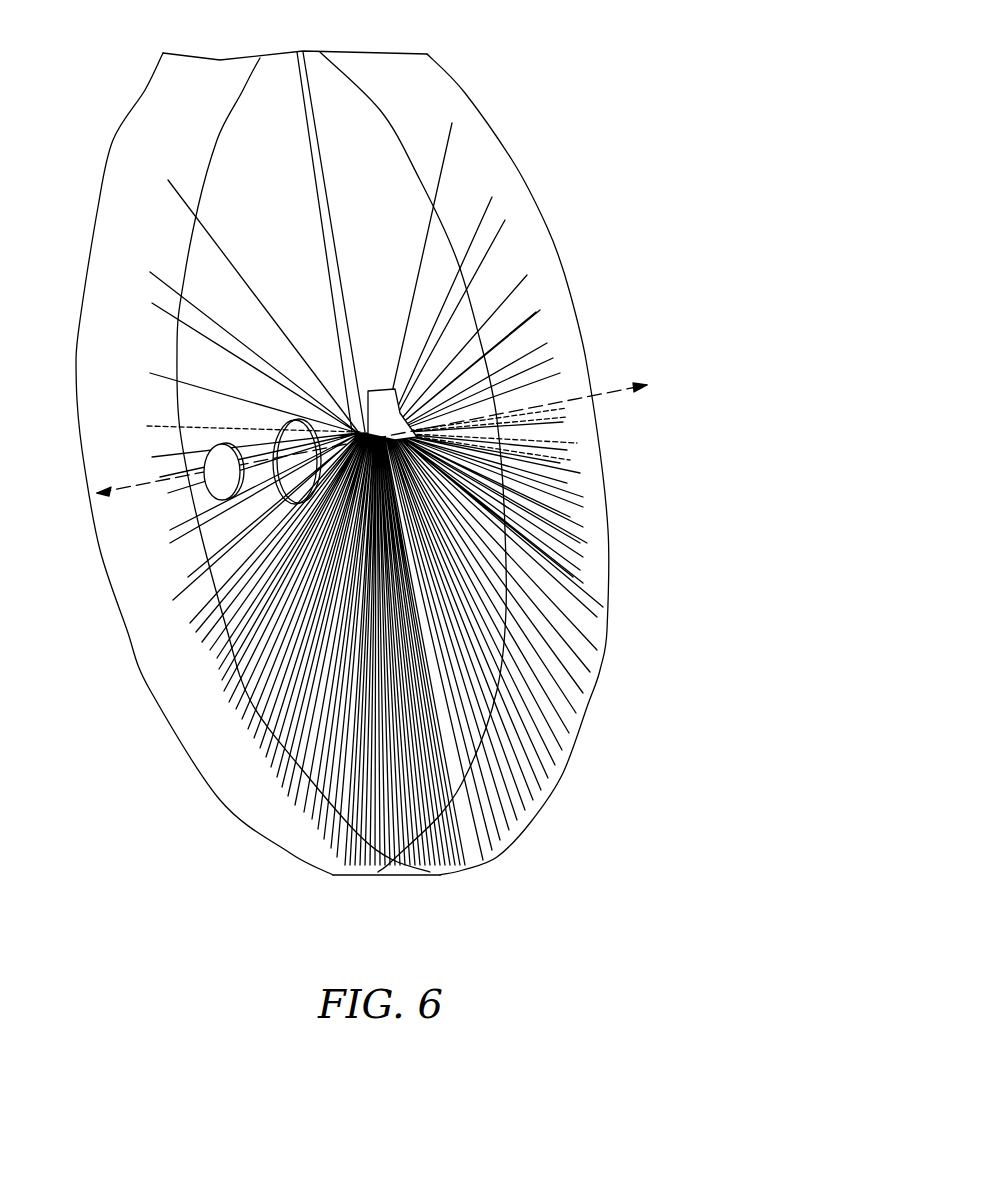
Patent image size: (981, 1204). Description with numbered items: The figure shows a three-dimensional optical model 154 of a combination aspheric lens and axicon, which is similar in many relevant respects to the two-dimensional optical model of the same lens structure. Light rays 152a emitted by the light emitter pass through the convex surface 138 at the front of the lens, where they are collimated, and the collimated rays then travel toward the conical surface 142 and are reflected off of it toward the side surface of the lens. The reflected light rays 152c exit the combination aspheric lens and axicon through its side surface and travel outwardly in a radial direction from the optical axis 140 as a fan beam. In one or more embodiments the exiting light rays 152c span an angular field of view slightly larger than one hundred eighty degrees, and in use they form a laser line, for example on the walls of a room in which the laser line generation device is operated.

The three-dimensional optical model 154 is at (698, 108).
The reflected light rays 152c is at (440, 167).
The light rays 152a is at (252, 457).
The convex surface 138 is at (287, 412).
The optical axis 140 is at (142, 487).
The conical surface 142 is at (572, 444).